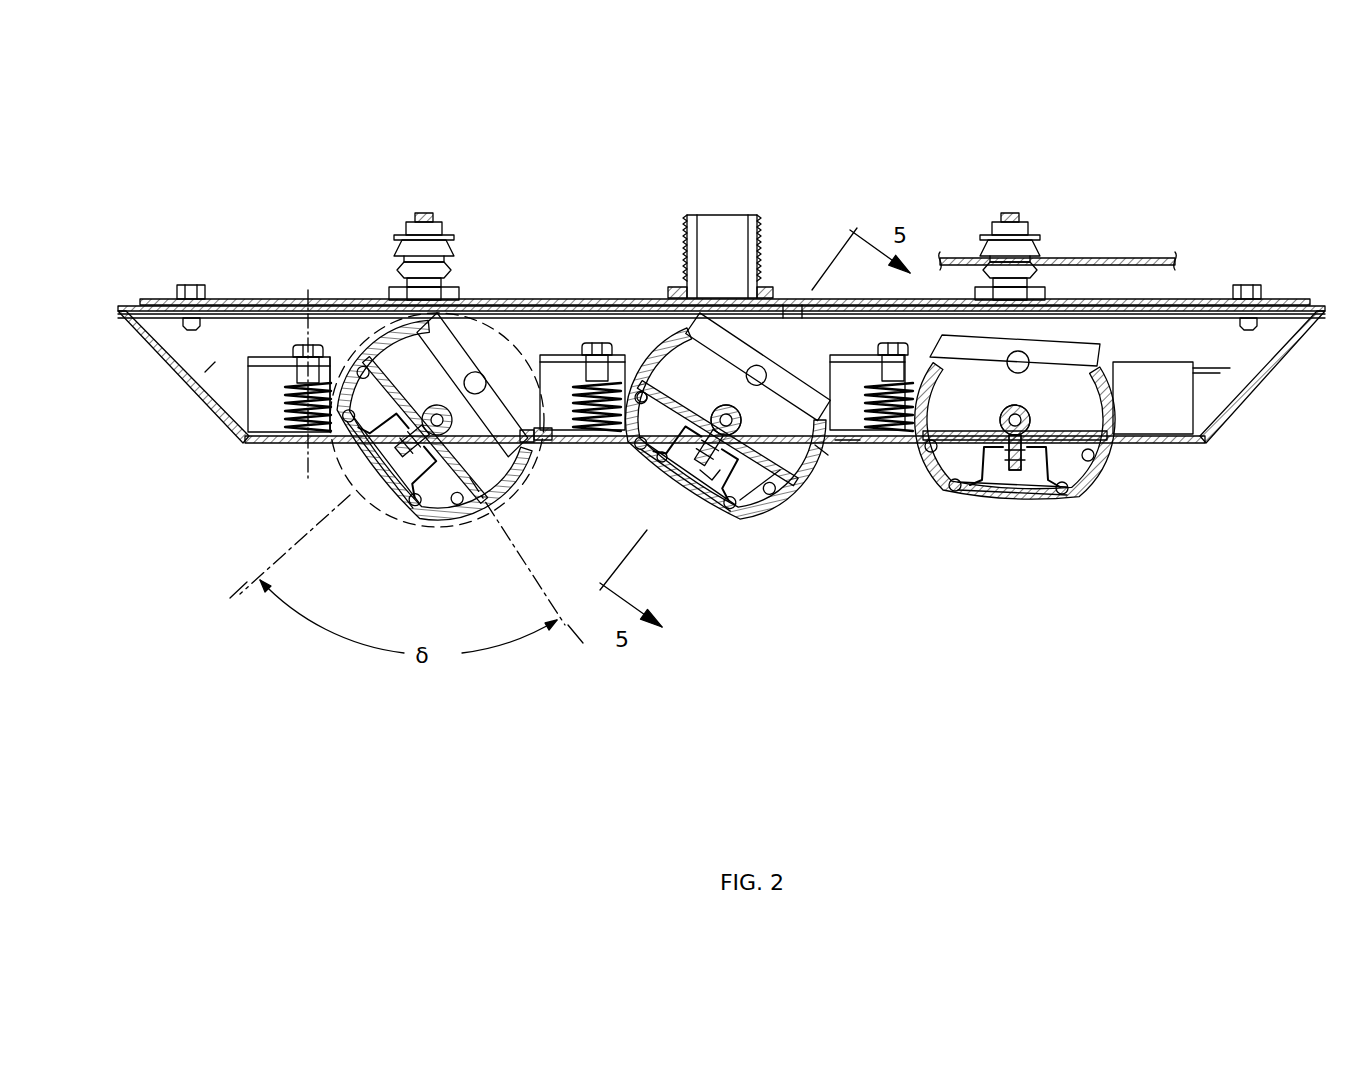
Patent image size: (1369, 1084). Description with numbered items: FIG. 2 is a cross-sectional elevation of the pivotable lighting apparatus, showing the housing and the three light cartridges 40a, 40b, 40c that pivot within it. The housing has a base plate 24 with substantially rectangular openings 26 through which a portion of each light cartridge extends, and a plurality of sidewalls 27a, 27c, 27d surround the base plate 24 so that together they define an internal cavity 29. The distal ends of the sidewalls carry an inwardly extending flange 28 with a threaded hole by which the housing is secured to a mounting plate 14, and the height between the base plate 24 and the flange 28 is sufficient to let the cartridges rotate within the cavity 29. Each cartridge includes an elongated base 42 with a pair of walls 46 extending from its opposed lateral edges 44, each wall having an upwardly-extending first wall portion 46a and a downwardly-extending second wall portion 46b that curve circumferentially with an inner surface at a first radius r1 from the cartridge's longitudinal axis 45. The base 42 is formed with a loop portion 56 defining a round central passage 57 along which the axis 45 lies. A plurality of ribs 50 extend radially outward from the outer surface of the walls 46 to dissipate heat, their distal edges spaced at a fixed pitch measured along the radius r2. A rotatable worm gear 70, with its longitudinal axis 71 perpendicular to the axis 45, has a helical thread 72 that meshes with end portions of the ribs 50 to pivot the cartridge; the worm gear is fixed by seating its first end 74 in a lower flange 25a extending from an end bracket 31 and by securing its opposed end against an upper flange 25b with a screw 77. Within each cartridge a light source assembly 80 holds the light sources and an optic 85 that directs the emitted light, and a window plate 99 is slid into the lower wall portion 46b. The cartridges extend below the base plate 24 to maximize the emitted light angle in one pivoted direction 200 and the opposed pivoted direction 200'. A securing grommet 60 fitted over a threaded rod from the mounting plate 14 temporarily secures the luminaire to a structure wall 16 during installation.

The mounting plate 14 is at (1200, 312).
The structure wall 16 is at (1087, 258).
The base plate 24 is at (1167, 430).
The lower flange 25a is at (540, 400).
The upper flange 25b is at (560, 345).
The rectangular openings 26 is at (843, 437).
The sidewall 27a is at (152, 352).
The sidewall 27c is at (1167, 382).
The sidewall 27d is at (210, 367).
The flange 28 is at (1320, 300).
The internal cavity 29 is at (1223, 367).
The end bracket 31 is at (1220, 373).
The light cartridge 40a is at (441, 540).
The light cartridge 40b is at (735, 538).
The light cartridge 40c is at (925, 508).
The elongated base 42 is at (783, 317).
The opposed lateral edges 44 is at (718, 297).
The longitudinal axis 45 is at (1018, 407).
The walls 46 is at (828, 440).
The first wall portion 46a is at (605, 320).
The second wall portion 46b is at (700, 455).
The ribs 50 is at (640, 320).
The loop portion 56 is at (745, 412).
The round central passage 57 is at (802, 317).
The securing grommet 60 is at (1040, 260).
The worm gear 70 is at (290, 340).
The longitudinal axis 71 is at (307, 334).
The helical thread 72 is at (287, 403).
The first end 74 is at (320, 430).
The screw 77 is at (330, 345).
The light source assembly 80 is at (772, 497).
The optic 85 is at (1017, 473).
The window plate 99 is at (693, 487).
The pivoted direction 200 is at (222, 546).
The opposed pivoted direction 200' is at (481, 626).
The first radius r1 is at (943, 374).
The radius r2 is at (1110, 398).